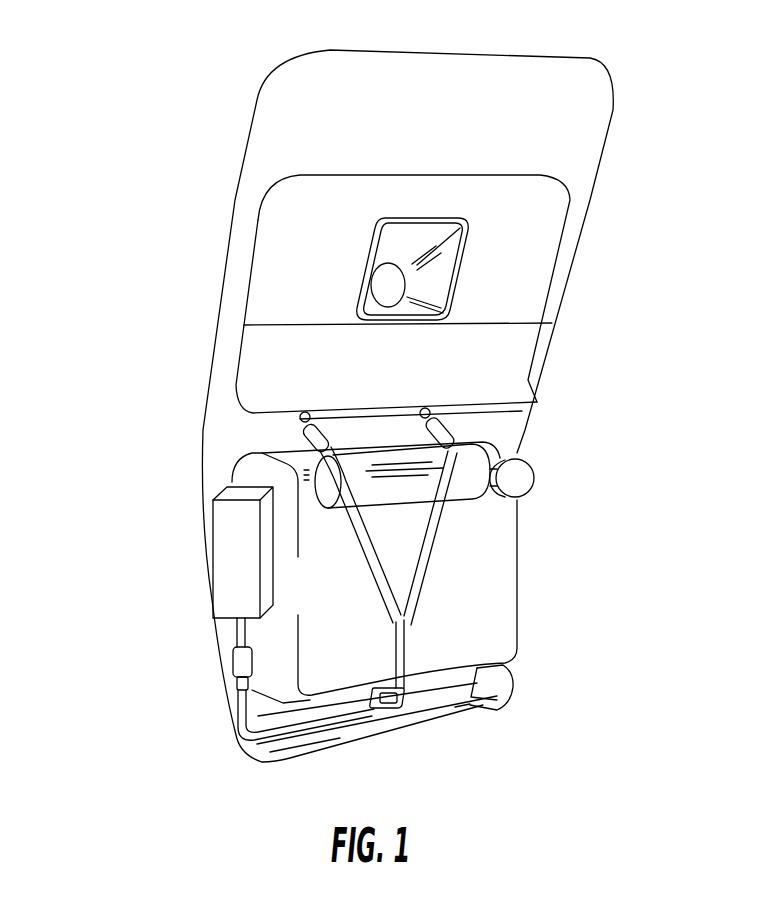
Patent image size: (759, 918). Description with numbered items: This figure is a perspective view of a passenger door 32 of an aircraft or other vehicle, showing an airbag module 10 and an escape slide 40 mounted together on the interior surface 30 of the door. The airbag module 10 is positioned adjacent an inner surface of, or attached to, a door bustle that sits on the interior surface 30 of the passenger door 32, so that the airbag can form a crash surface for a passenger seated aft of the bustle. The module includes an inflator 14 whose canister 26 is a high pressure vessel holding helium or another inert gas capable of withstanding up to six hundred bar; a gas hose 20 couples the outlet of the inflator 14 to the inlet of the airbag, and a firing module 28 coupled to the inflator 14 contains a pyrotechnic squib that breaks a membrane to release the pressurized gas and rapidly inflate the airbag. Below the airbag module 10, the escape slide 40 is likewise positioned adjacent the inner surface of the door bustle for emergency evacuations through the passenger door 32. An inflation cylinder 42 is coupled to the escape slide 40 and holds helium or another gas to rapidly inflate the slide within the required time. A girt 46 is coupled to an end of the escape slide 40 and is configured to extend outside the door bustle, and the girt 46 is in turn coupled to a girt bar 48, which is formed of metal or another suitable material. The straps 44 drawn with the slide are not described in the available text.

The airbag module 10 is at (236, 553).
The inflator 14 is at (226, 683).
The gas hose 20 is at (225, 623).
The canister 26 is at (240, 653).
The firing module 28 is at (235, 722).
The interior surface 30 is at (330, 100).
The passenger door 32 is at (575, 118).
The escape slide 40 is at (490, 571).
The inflation cylinder 42 is at (533, 480).
The straps 44 is at (378, 558).
The girt 46 is at (455, 707).
The girt bar 48 is at (283, 742).